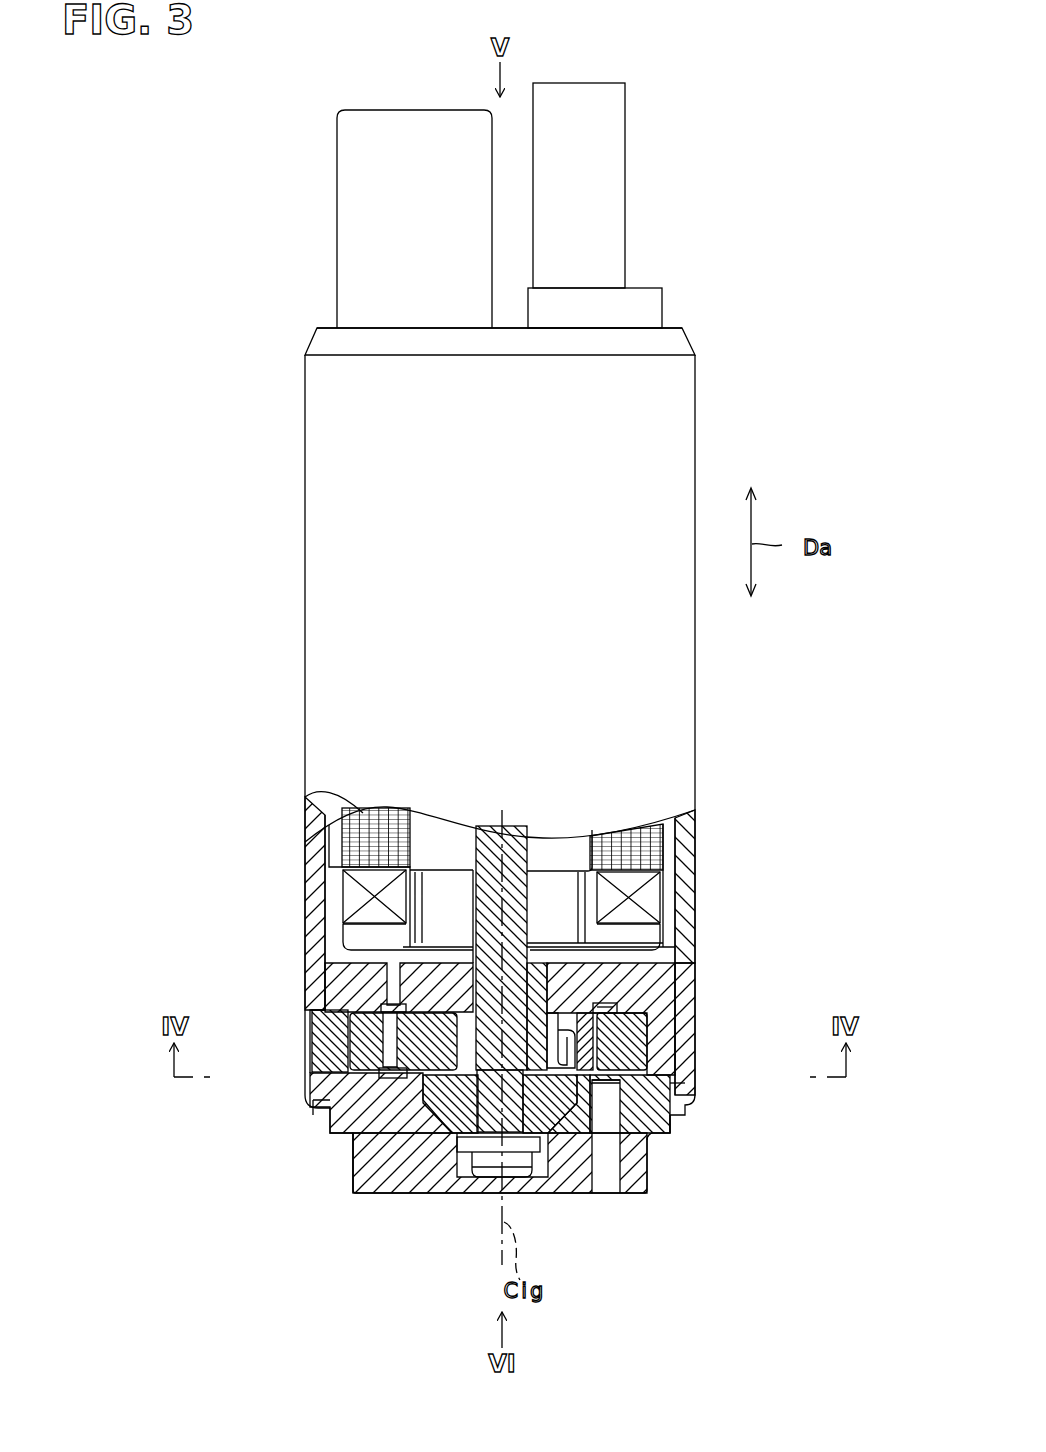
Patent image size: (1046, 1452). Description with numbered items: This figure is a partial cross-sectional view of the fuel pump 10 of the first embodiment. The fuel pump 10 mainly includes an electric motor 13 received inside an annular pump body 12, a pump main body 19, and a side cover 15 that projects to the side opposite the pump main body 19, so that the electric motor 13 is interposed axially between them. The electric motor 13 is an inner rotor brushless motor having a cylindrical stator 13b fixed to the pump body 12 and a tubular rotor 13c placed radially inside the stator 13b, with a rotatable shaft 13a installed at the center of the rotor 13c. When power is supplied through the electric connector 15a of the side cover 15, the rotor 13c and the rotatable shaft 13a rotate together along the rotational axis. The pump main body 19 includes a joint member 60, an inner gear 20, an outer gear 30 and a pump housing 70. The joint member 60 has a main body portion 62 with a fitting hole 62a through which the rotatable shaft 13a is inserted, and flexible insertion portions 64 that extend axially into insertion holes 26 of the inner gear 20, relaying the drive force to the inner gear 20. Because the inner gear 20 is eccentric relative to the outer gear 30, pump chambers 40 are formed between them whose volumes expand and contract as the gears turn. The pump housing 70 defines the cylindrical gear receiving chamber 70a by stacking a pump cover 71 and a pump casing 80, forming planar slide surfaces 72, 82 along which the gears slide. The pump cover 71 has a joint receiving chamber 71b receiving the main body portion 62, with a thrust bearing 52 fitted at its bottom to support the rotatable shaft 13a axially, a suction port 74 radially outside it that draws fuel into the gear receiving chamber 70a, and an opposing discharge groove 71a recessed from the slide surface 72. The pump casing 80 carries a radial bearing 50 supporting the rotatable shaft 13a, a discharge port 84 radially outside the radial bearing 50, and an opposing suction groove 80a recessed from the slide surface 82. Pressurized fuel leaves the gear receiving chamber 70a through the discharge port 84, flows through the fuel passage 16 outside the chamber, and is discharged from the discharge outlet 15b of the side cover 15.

The fuel pump 10 is at (334, 106).
The pump body 12 is at (690, 826).
The electric motor 13 is at (664, 858).
The rotatable shaft 13a is at (528, 900).
The stator 13b is at (335, 848).
The rotor 13c is at (432, 822).
The side cover 15 is at (662, 303).
The electric connector 15a is at (372, 196).
The discharge outlet 15b is at (612, 187).
The fuel passage 16 is at (333, 885).
The pump main body 19 is at (338, 960).
The inner gear 20 is at (410, 1095).
The insertion holes 26 is at (560, 1012).
The outer gear 30 is at (357, 1058).
The pump chambers 40 is at (615, 1020).
The radial bearing 50 is at (360, 1159).
The thrust bearing 52 is at (487, 1178).
The joint member 60 is at (527, 1242).
The main body portion 62 is at (535, 1180).
The fitting hole 62a is at (447, 1180).
The insertion portions 64 is at (596, 1180).
The pump housing 70 is at (752, 1057).
The gear receiving chamber 70a is at (598, 1040).
The pump cover 71 is at (693, 1104).
The opposing discharge groove 71a is at (314, 1104).
The joint receiving chamber 71b is at (410, 1178).
The slide surface 72 is at (398, 1068).
The suction port 74 is at (660, 1135).
The pump casing 80 is at (660, 1068).
The opposing suction groove 80a is at (608, 1008).
The slide surface 82 is at (360, 1028).
The discharge port 84 is at (323, 1005).